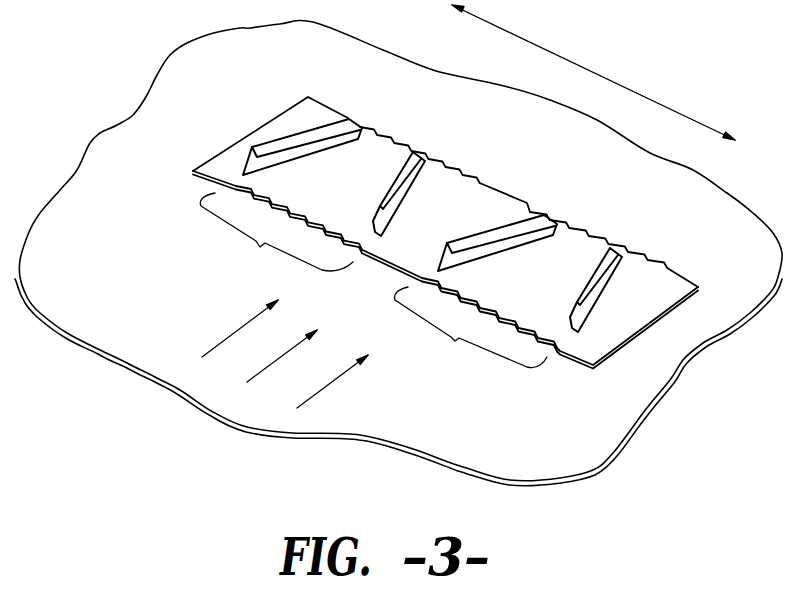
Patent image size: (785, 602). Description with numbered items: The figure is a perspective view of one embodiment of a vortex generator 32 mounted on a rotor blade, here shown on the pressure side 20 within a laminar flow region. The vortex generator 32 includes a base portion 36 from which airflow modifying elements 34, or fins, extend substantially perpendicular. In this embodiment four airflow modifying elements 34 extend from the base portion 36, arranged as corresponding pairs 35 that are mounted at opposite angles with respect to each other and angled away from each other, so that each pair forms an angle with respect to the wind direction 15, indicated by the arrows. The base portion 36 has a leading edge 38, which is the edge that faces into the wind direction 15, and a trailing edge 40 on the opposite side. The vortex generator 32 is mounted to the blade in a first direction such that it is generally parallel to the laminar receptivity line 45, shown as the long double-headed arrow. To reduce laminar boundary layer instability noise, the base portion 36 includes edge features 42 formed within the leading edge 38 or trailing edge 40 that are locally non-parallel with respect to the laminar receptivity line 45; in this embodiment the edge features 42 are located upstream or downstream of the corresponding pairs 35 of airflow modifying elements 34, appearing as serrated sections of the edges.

The wind direction 15 is at (230, 337).
The pressure side 20 is at (177, 87).
The vortex generator 32 is at (286, 130).
The airflow modifying element 34 is at (367, 125).
The pair of airflow modifying elements 35 is at (373, 280).
The base portion 36 is at (523, 290).
The leading edge 38 is at (200, 181).
The trailing edge 40 is at (512, 195).
The edge feature 42 is at (314, 234).
The laminar receptivity line 45 is at (585, 65).